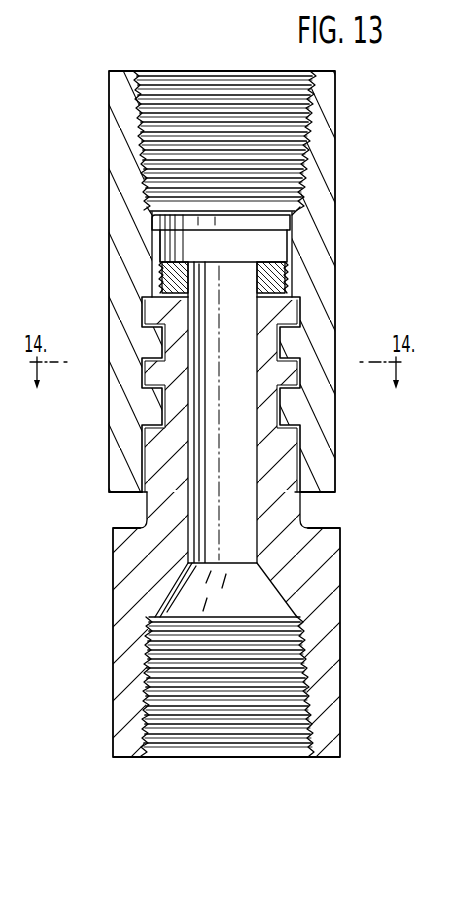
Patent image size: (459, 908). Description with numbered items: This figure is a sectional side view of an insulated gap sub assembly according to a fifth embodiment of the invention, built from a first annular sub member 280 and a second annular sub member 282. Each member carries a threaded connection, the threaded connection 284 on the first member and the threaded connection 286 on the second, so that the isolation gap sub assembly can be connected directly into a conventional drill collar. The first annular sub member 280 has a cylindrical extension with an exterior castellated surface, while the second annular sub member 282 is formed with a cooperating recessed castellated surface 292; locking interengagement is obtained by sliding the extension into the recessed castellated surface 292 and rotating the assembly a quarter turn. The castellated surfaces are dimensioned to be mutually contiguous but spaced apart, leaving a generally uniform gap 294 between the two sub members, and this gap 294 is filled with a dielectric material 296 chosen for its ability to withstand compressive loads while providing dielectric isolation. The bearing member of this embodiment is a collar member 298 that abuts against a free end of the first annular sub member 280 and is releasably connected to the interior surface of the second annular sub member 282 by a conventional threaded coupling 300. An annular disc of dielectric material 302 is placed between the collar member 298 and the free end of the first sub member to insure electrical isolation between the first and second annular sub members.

The first annular sub member 280 is at (328, 584).
The second annular sub member 282 is at (335, 147).
The threaded connection 284 is at (156, 733).
The threaded connection 286 is at (140, 88).
The recessed castellated surface 292 is at (298, 328).
The gap 294 is at (298, 446).
The dielectric material 296 is at (143, 493).
The collar member 298 is at (182, 262).
The threaded coupling 300 is at (287, 283).
The annular disc of dielectric material 302 is at (144, 312).